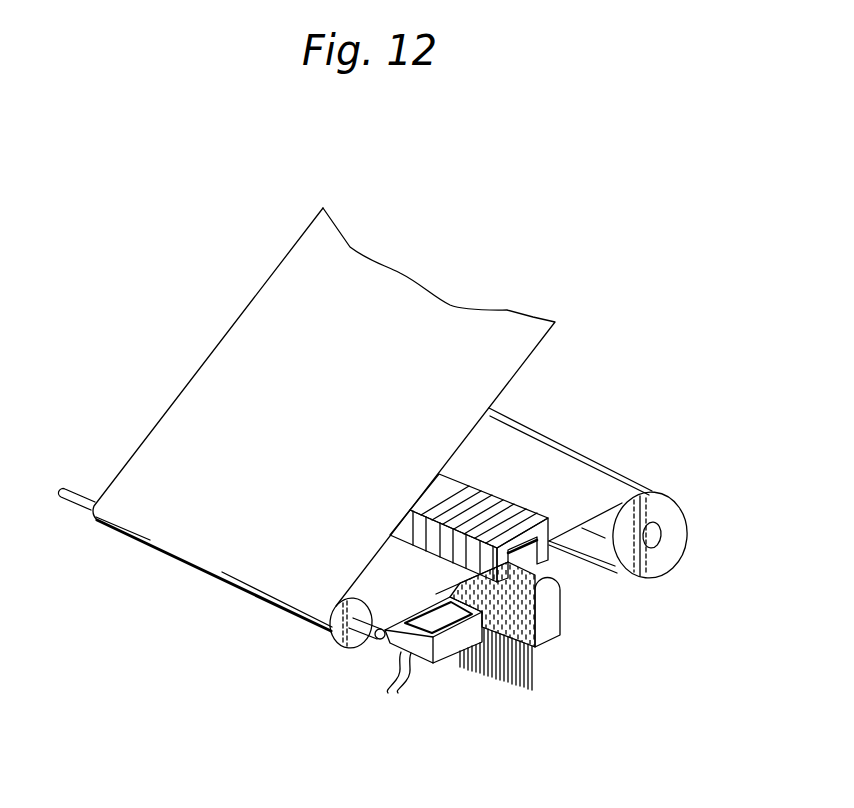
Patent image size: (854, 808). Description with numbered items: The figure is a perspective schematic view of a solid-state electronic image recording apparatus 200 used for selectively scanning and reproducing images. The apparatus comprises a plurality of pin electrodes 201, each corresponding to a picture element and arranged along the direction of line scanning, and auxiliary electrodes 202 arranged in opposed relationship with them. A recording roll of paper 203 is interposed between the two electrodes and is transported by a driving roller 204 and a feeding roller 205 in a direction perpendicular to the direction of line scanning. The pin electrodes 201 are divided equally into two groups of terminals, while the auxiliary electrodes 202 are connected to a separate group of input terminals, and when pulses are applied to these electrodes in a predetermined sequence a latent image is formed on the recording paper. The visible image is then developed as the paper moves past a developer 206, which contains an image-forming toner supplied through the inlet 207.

The solid-state electronic image recording apparatus 200 is at (678, 313).
The pin electrodes 201 is at (532, 676).
The auxiliary electrodes 202 is at (508, 502).
The recording roll of paper 203 is at (515, 309).
The driving roller 204 is at (338, 649).
The feeding roller 205 is at (693, 490).
The developer 206 is at (447, 648).
The inlet 207 is at (390, 694).